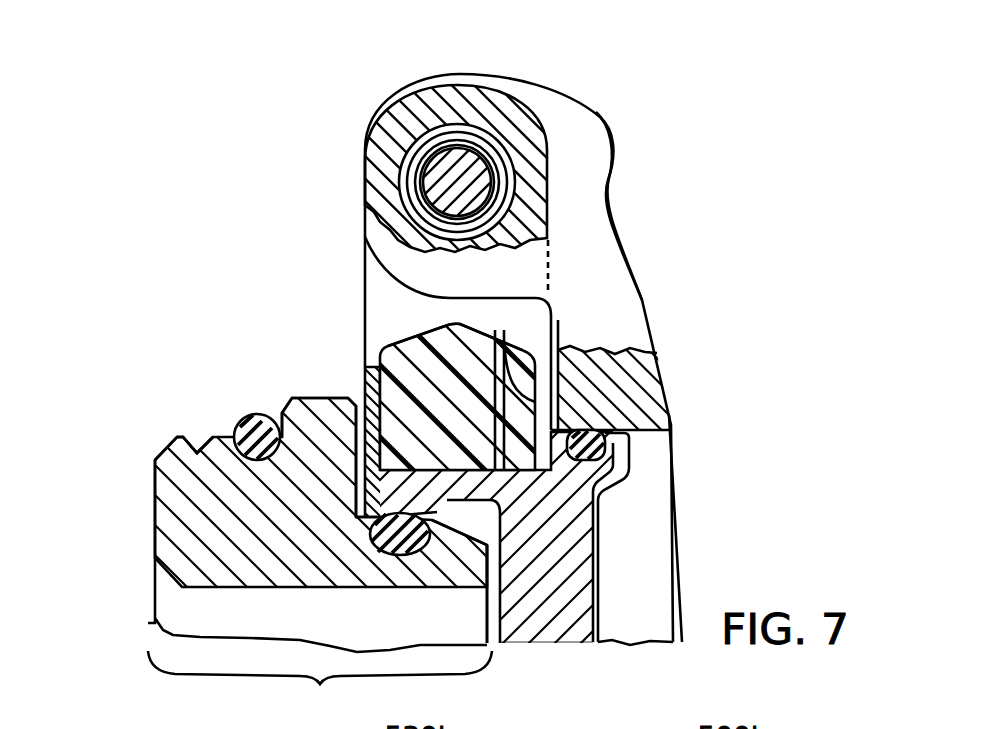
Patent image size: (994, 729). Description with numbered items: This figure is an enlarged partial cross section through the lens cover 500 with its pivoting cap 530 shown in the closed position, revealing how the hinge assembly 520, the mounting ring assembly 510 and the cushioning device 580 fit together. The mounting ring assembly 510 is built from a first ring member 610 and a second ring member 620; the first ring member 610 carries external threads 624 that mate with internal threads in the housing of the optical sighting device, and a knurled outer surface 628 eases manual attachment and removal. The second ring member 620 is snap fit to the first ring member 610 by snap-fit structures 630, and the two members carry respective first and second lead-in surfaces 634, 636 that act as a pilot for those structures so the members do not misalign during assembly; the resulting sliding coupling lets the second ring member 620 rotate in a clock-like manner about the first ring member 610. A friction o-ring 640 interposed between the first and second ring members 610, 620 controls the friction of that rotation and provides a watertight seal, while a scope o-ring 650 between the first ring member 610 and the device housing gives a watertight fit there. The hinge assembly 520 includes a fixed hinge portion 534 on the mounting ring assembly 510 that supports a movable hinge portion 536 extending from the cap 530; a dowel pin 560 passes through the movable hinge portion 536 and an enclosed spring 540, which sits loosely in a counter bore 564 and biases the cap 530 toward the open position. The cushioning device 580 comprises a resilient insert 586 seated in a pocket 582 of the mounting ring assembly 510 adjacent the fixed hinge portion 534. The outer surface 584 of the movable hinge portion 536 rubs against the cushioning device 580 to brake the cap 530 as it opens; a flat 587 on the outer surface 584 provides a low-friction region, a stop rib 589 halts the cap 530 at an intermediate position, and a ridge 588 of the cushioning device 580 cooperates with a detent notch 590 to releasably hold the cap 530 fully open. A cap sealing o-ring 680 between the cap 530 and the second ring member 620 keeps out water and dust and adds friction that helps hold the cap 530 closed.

The lens cover 500 is at (228, 162).
The mounting ring assembly 510 is at (215, 333).
The hinge assembly 520 is at (574, 68).
The cap 530 is at (653, 557).
The fixed hinge portion 534 is at (378, 290).
The movable hinge portion 536 is at (593, 210).
The spring 540 is at (418, 136).
The dowel pin 560 is at (433, 186).
The counter bore 564 is at (407, 160).
The cushioning device 580 is at (385, 300).
The insert 586 is at (457, 425).
The pocket 582 is at (504, 330).
The outer surface 584 is at (513, 77).
The flat 587 is at (418, 77).
The ridge 588 is at (450, 323).
The stop rib 589 is at (607, 122).
The detent notch 590 is at (610, 178).
The first ring member 610 is at (213, 417).
The second ring member 620 is at (557, 620).
The external threads 624 is at (198, 450).
The knurled outer surface 628 is at (323, 396).
The snap-fit structures 630 is at (447, 542).
The first lead-in surface 634 is at (505, 497).
The second lead-in surface 636 is at (380, 543).
The friction o-ring 640 is at (403, 547).
The scope o-ring 650 is at (247, 416).
The cap sealing o-ring 680 is at (595, 425).